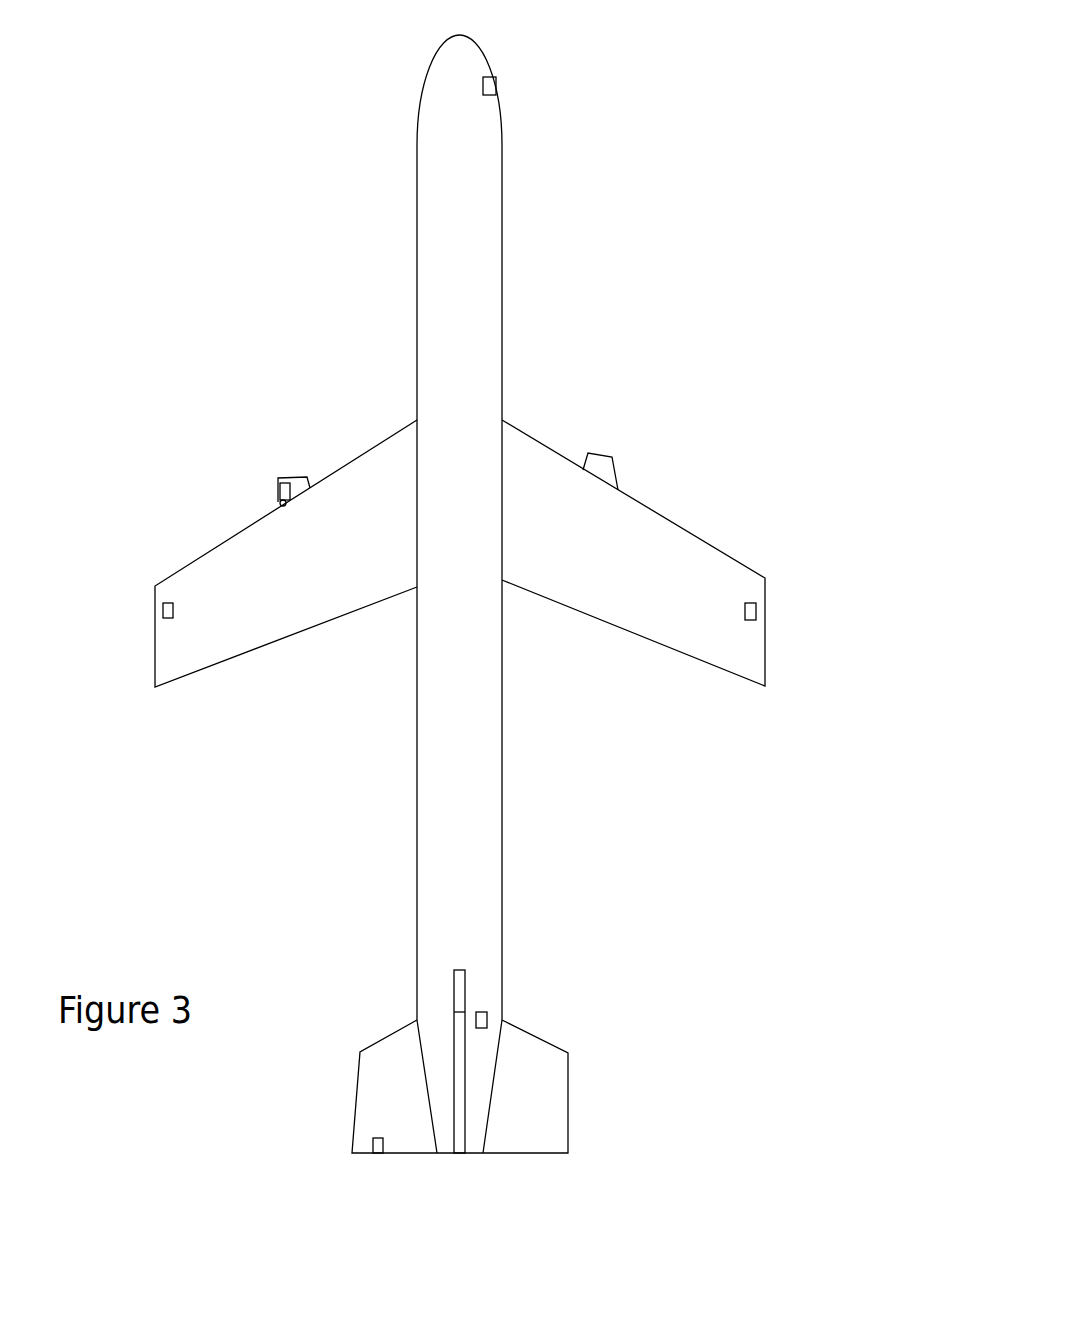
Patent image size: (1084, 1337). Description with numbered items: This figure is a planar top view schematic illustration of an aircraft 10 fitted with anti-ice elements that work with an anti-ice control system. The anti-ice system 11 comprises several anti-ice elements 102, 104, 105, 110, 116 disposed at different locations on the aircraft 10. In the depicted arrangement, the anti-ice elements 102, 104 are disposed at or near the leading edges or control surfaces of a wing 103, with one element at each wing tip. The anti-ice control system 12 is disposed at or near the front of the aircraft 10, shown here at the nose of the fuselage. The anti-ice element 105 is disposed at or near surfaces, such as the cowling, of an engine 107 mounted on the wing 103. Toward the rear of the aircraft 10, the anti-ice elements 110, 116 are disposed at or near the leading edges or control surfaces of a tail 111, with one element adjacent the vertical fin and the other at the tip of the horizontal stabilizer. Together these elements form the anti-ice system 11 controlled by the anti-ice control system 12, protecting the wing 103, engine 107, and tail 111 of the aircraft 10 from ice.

The aircraft 10 is at (700, 246).
The anti-ice system 11 is at (325, 254).
The anti-ice control system 12 is at (490, 80).
The anti-ice element 102 is at (163, 607).
The wing 103 is at (670, 522).
The anti-ice element 104 is at (755, 603).
The anti-ice element 105 is at (275, 500).
The engine 107 is at (285, 482).
The anti-ice element 110 is at (487, 1012).
The tail 111 is at (373, 1043).
The anti-ice element 116 is at (373, 1150).